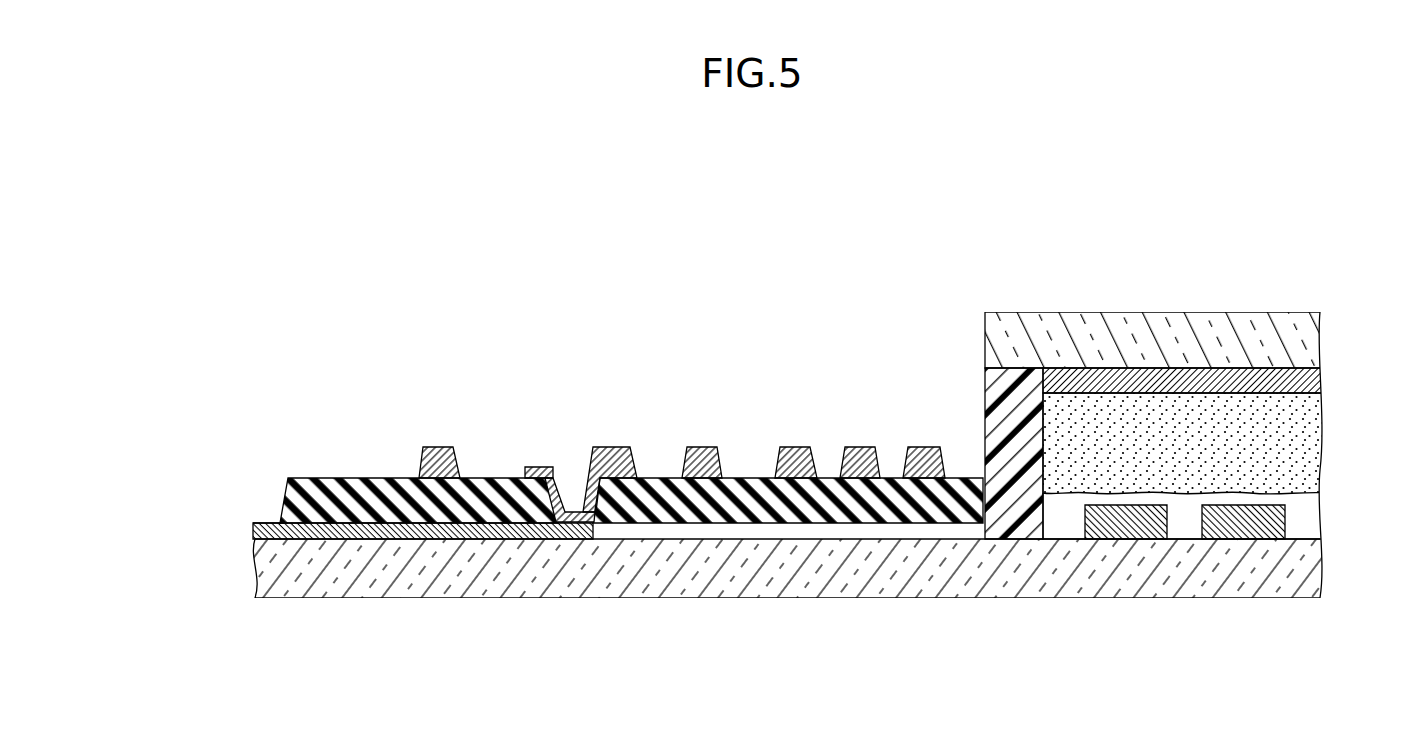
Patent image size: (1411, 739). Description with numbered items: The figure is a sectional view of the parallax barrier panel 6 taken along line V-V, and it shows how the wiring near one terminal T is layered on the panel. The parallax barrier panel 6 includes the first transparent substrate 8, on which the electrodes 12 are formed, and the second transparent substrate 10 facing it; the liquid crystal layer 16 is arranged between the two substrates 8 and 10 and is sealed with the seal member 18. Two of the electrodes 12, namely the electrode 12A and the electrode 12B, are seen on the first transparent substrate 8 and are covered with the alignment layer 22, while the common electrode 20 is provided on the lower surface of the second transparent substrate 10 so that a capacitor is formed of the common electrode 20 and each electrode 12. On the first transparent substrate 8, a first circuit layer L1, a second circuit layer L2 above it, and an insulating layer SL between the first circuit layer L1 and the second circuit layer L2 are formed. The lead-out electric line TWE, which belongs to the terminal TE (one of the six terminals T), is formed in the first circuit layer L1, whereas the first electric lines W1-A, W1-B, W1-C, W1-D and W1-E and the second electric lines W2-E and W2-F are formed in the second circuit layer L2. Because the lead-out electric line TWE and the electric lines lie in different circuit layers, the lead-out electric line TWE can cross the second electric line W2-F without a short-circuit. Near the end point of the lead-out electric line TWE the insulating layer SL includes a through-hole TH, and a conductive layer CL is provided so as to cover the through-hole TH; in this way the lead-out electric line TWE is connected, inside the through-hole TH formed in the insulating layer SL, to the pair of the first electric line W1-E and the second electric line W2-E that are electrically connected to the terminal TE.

The parallax barrier panel 6 is at (776, 289).
The first transparent substrate 8 is at (1312, 576).
The second transparent substrate 10 is at (1312, 343).
The electrode 12 is at (1129, 494).
The electrode 12A is at (1123, 517).
The electrode 12B is at (1238, 517).
The liquid crystal layer 16 is at (1312, 439).
The seal member 18 is at (1018, 525).
The common electrode 20 is at (1312, 382).
The alignment layer 22 is at (1312, 524).
The first circuit layer L1 is at (354, 541).
The lead-out electric line TWE is at (257, 529).
The second circuit layer L2 is at (412, 347).
The insulating layer SL is at (330, 490).
The terminal T is at (238, 479).
The terminal TE is at (268, 506).
The through-hole TH is at (564, 464).
The conductive layer CL is at (588, 473).
The first electric line W1-A is at (925, 447).
The first electric line W1-B is at (855, 447).
The first electric line W1-C is at (796, 447).
The first electric line W1-D is at (705, 447).
The first electric line W1-E is at (620, 430).
The second electric line W2-E is at (612, 447).
The second electric line W2-F is at (442, 447).